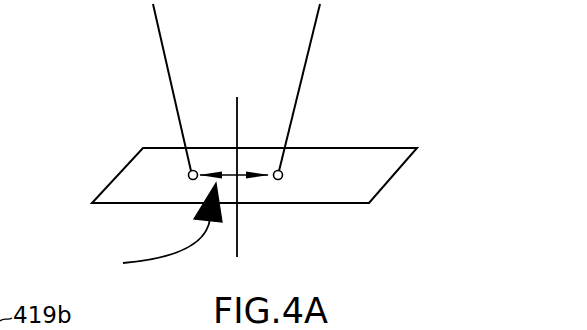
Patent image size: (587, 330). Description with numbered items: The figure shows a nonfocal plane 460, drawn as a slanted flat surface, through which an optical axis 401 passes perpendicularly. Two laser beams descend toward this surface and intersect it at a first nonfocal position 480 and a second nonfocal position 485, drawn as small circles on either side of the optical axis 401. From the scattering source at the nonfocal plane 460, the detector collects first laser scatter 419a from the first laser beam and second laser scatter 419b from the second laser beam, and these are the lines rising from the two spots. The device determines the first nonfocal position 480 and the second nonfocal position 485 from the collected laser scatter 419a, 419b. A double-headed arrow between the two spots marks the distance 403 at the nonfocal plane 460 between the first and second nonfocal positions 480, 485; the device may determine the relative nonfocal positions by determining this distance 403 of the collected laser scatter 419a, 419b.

The first laser scatter 419a is at (154, 20).
The second laser scatter 419b is at (317, 22).
The first nonfocal position 480 is at (189, 169).
The second nonfocal position 485 is at (283, 174).
The nonfocal plane 460 is at (409, 157).
The optical axis 401 is at (238, 229).
The distance 403 is at (140, 232).